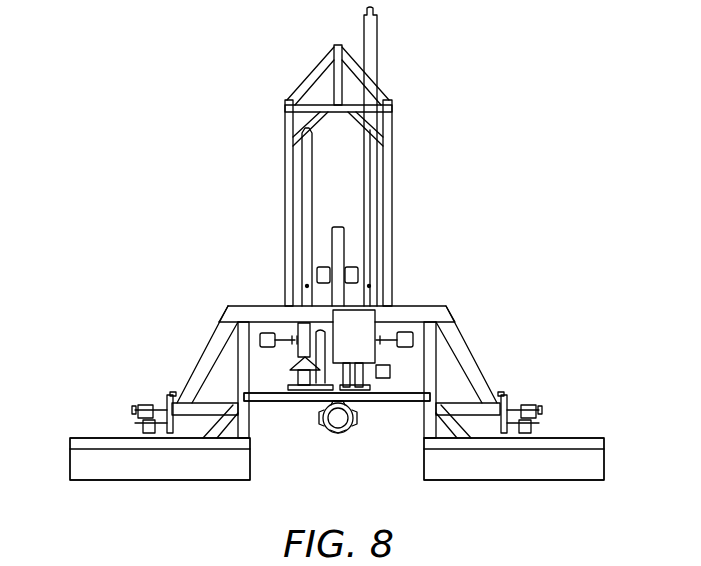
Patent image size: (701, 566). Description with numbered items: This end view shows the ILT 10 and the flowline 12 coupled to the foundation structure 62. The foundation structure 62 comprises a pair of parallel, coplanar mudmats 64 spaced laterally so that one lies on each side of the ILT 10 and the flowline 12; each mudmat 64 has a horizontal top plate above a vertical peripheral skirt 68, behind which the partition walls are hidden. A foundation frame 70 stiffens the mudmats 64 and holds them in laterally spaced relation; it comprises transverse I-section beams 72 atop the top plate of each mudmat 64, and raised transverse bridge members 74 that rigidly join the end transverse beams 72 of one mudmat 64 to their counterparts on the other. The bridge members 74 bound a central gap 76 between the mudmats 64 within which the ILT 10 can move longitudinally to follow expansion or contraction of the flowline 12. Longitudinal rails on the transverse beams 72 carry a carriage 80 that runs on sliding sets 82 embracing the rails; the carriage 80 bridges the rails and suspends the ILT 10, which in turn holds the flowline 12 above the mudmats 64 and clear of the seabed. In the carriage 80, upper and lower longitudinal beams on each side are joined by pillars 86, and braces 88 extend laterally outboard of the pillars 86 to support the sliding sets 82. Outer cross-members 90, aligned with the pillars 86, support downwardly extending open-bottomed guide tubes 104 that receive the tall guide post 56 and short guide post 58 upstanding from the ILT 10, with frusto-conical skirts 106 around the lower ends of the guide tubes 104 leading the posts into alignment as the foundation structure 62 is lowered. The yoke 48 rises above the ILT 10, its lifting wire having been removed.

The ILT 10 is at (436, 273).
The flowline 12 is at (339, 433).
The yoke 48 is at (418, 136).
The tall guide post 56 is at (378, 45).
The short guide post 58 is at (302, 168).
The foundation structure 62 is at (100, 415).
The mudmat 64 is at (64, 472).
The vertical peripheral skirt 68 is at (117, 471).
The foundation frame 70 is at (576, 410).
The transverse I-section beam 72 is at (219, 447).
The raised transverse bridge member 74 is at (390, 402).
The central gap 76 is at (314, 462).
The carriage 80 is at (490, 352).
The sliding set 82 is at (162, 405).
The pillar 86 is at (232, 335).
The brace 88 is at (193, 413).
The outer cross-member 90 is at (240, 312).
The guide tube 104 is at (307, 333).
The frusto-conical skirt 106 is at (300, 387).